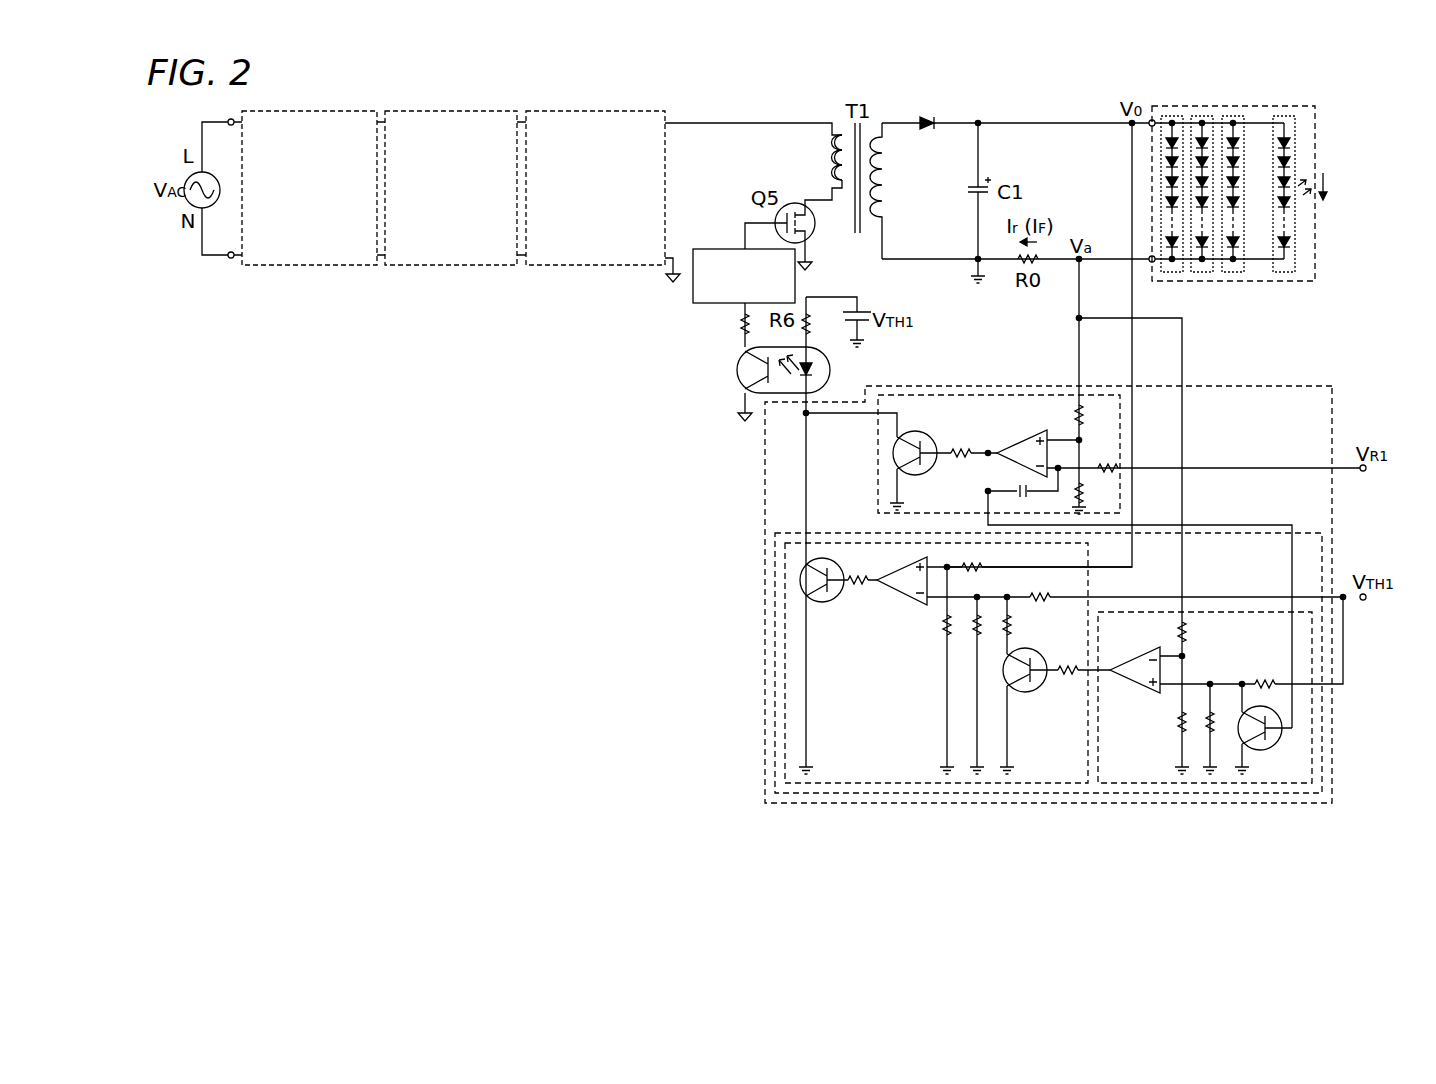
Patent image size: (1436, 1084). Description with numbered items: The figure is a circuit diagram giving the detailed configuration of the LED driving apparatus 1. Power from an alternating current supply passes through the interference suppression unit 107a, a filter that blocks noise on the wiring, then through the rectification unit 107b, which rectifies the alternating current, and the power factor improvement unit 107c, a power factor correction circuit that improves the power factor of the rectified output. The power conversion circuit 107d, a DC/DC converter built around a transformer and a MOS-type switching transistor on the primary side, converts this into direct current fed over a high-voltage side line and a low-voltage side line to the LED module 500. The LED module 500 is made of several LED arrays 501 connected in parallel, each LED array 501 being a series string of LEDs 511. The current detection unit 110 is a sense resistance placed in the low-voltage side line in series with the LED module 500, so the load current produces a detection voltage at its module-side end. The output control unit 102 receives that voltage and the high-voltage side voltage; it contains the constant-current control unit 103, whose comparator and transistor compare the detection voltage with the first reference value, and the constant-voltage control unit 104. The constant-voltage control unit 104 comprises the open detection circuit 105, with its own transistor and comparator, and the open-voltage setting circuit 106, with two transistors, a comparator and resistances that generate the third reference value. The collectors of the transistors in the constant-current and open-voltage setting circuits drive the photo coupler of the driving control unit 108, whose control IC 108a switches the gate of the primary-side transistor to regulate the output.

The LED driving apparatus 1 is at (689, 602).
The output control unit 102 is at (1262, 386).
The constant-current control unit 103 is at (1003, 395).
The constant-voltage control unit 104 is at (1322, 536).
The open detection circuit 105 is at (1283, 791).
The open-voltage setting circuit 106 is at (817, 785).
The interference suppression unit 107a is at (307, 265).
The rectification unit 107b is at (451, 265).
The power factor improvement unit 107c is at (596, 265).
The power conversion circuit 107d is at (909, 191).
The driving control unit 108 is at (698, 391).
The control IC 108a is at (738, 249).
The current detection unit 110 is at (1065, 218).
The LED module 500 is at (1273, 230).
The LED array 501 is at (1274, 194).
The LED 511 is at (1291, 206).